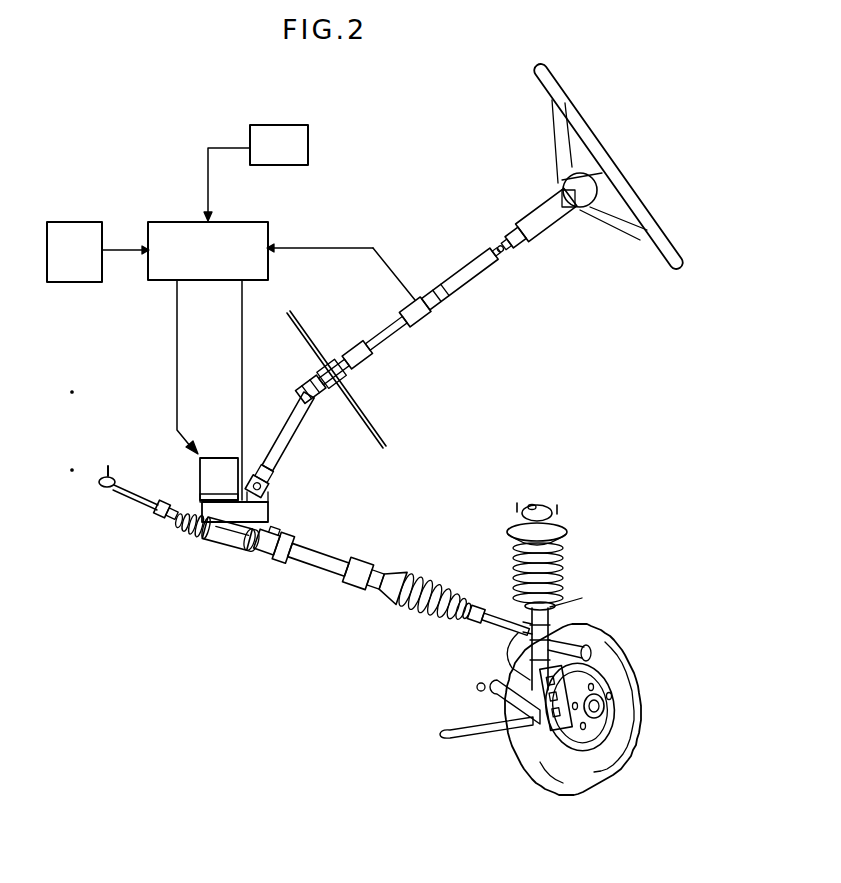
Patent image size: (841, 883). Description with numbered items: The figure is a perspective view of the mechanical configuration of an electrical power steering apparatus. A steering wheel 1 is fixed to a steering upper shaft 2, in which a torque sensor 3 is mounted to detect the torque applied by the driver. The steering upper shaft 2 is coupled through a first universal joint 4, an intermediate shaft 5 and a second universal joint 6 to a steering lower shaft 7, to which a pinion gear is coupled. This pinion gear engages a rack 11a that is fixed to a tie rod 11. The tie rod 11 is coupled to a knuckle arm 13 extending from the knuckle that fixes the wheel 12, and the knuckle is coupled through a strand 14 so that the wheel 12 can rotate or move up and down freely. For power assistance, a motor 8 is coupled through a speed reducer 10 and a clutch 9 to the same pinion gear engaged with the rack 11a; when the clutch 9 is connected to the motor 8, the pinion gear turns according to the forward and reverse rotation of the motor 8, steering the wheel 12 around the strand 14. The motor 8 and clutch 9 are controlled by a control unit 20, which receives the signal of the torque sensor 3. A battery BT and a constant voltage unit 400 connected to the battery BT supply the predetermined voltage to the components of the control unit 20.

The steering wheel 1 is at (592, 128).
The steering upper shaft 2 is at (503, 255).
The torque sensor 3 is at (427, 328).
The first universal joint 4 is at (307, 378).
The intermediate shaft 5 is at (293, 432).
The second universal joint 6 is at (267, 488).
The steering lower shaft 7 is at (247, 538).
The motor 8 is at (218, 457).
The clutch 9 is at (207, 497).
The speed reducer 10 is at (262, 510).
The tie rod 11 is at (135, 500).
The rack 11a is at (227, 549).
The wheel 12 is at (592, 777).
The knuckle arm 13 is at (598, 633).
The strand 14 is at (553, 607).
The control unit 20 is at (230, 220).
The constant voltage unit 400 is at (68, 218).
The battery BT is at (277, 123).